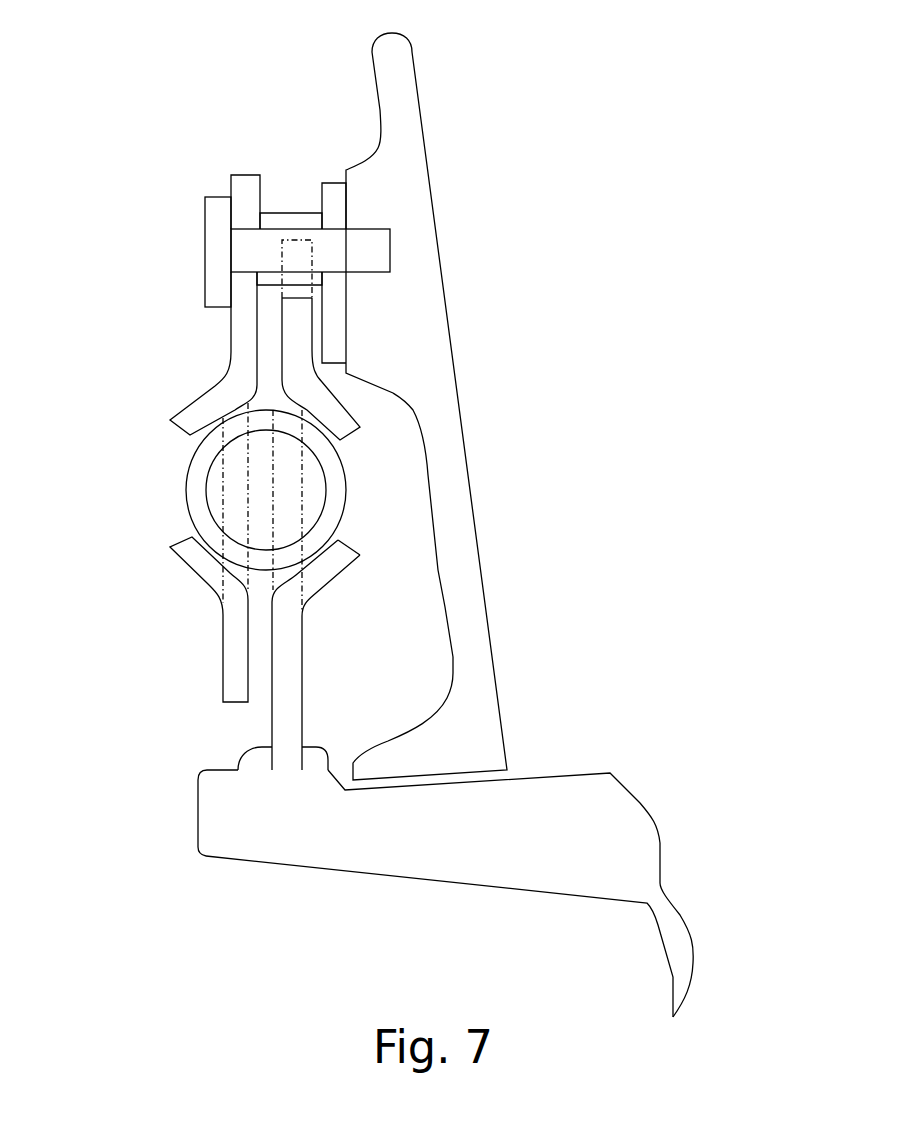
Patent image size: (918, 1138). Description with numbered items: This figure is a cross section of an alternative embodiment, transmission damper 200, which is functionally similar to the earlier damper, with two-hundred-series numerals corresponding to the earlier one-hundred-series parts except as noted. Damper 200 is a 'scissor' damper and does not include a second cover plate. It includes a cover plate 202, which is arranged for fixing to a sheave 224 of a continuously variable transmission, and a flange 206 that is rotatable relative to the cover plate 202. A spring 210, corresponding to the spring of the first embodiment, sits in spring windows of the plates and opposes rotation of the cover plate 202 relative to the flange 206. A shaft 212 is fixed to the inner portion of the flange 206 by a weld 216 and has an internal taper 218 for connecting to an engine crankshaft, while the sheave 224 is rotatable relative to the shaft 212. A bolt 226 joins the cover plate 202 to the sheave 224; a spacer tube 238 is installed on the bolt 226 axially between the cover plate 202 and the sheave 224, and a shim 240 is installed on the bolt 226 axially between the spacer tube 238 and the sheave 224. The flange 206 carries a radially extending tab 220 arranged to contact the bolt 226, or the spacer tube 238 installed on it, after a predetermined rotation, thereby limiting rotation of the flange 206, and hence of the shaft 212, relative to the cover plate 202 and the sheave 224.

The transmission damper 200 is at (445, 113).
The cover plate 202 is at (242, 183).
The flange 206 is at (283, 723).
The spring 210 is at (202, 492).
The shaft 212 is at (473, 840).
The weld 216 is at (260, 760).
The internal taper 218 is at (462, 885).
The radially extending tab 220 is at (303, 253).
The sheave 224 is at (413, 358).
The bolt 226 is at (220, 250).
The spacer tube 238 is at (281, 223).
The shim 240 is at (334, 190).